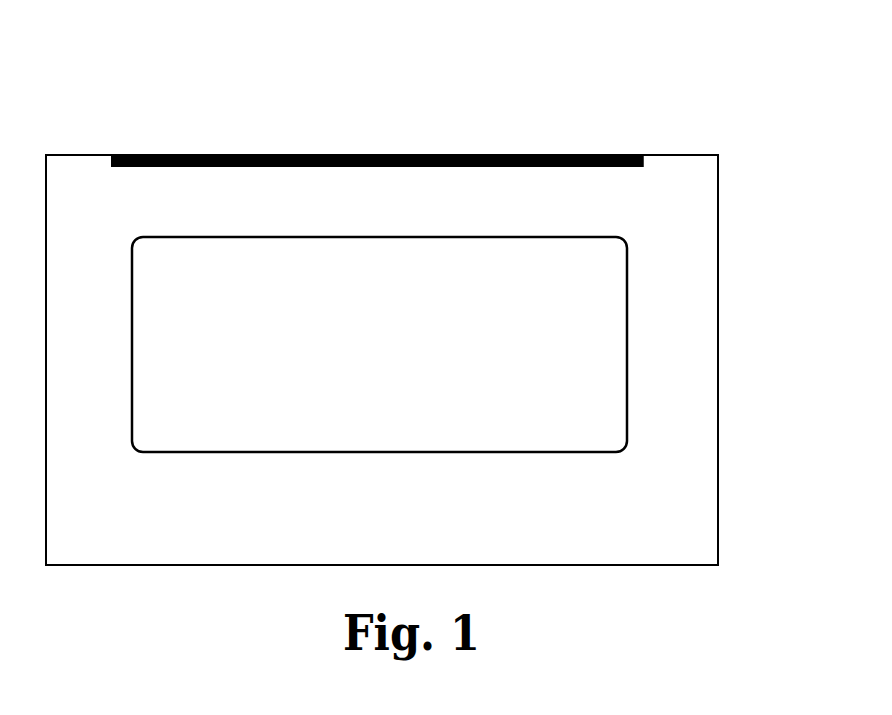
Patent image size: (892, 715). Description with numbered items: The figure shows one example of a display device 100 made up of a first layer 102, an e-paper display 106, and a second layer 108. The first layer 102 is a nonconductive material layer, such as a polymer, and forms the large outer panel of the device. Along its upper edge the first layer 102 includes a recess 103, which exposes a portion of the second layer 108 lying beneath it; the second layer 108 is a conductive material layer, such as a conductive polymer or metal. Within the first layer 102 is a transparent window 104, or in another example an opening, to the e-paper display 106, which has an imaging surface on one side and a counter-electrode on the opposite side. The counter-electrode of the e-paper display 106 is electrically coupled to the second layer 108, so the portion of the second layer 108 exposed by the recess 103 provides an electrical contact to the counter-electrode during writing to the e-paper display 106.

The display device 100 is at (510, 92).
The first layer 102 is at (700, 213).
The recess 103 is at (633, 168).
The transparent window 104 is at (627, 290).
The e-paper display 106 is at (607, 375).
The second layer 108 is at (609, 157).